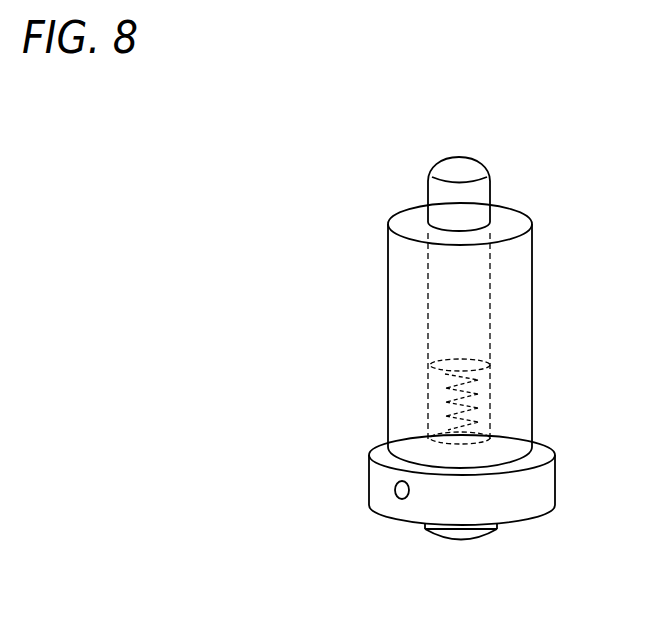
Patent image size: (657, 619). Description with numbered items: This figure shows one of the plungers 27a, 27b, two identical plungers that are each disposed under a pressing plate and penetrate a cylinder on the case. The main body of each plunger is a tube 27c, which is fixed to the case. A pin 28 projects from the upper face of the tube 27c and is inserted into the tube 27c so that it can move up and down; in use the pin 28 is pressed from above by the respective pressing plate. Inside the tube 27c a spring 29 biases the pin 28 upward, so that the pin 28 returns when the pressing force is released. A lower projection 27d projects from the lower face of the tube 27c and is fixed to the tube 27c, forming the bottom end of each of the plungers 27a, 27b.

The plunger 27a is at (398, 296).
The plunger 27b is at (332, 176).
The tube 27c is at (388, 337).
The lower projection 27d is at (459, 543).
The pin 28 is at (460, 156).
The spring 29 is at (470, 397).